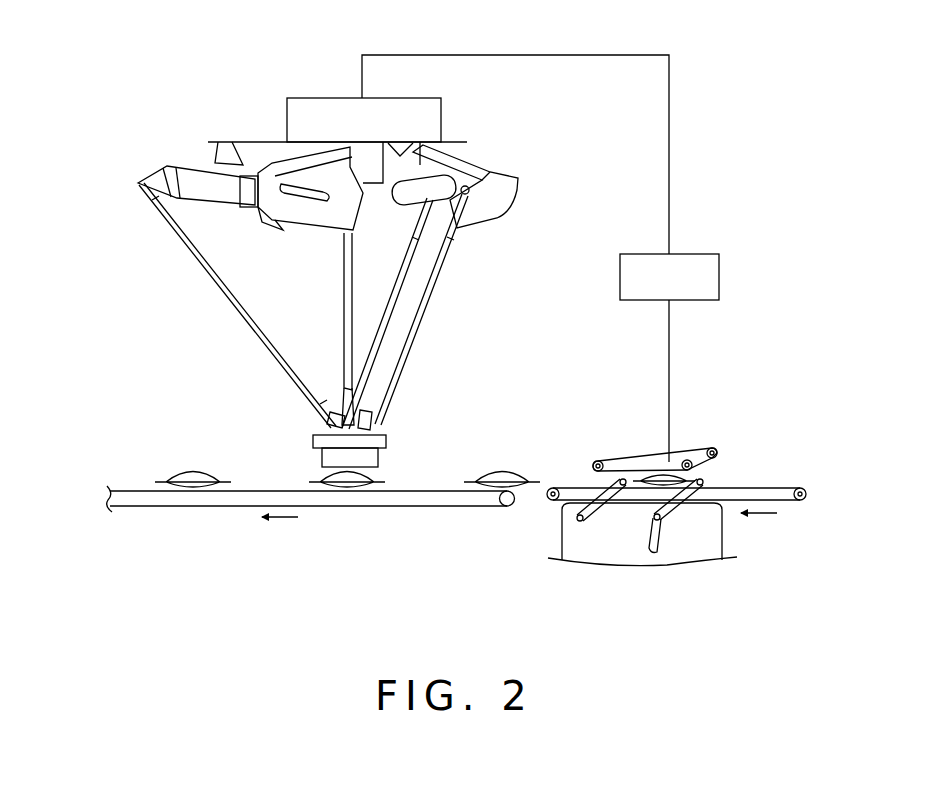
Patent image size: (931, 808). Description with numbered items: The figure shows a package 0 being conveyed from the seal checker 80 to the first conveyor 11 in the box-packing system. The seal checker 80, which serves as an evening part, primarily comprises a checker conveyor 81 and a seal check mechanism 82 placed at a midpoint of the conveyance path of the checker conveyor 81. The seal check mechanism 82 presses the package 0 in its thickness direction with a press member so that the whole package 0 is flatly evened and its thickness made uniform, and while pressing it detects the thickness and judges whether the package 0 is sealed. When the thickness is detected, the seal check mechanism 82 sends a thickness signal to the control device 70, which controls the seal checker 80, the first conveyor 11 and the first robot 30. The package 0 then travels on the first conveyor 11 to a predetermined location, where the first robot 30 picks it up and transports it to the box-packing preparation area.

The first robot 30 is at (218, 127).
The first conveyor 11 is at (130, 477).
The package 0 is at (505, 475).
The control device 70 is at (720, 270).
The seal checker 80 is at (690, 417).
The checker conveyor 81 is at (740, 482).
The seal check mechanism 82 is at (650, 452).